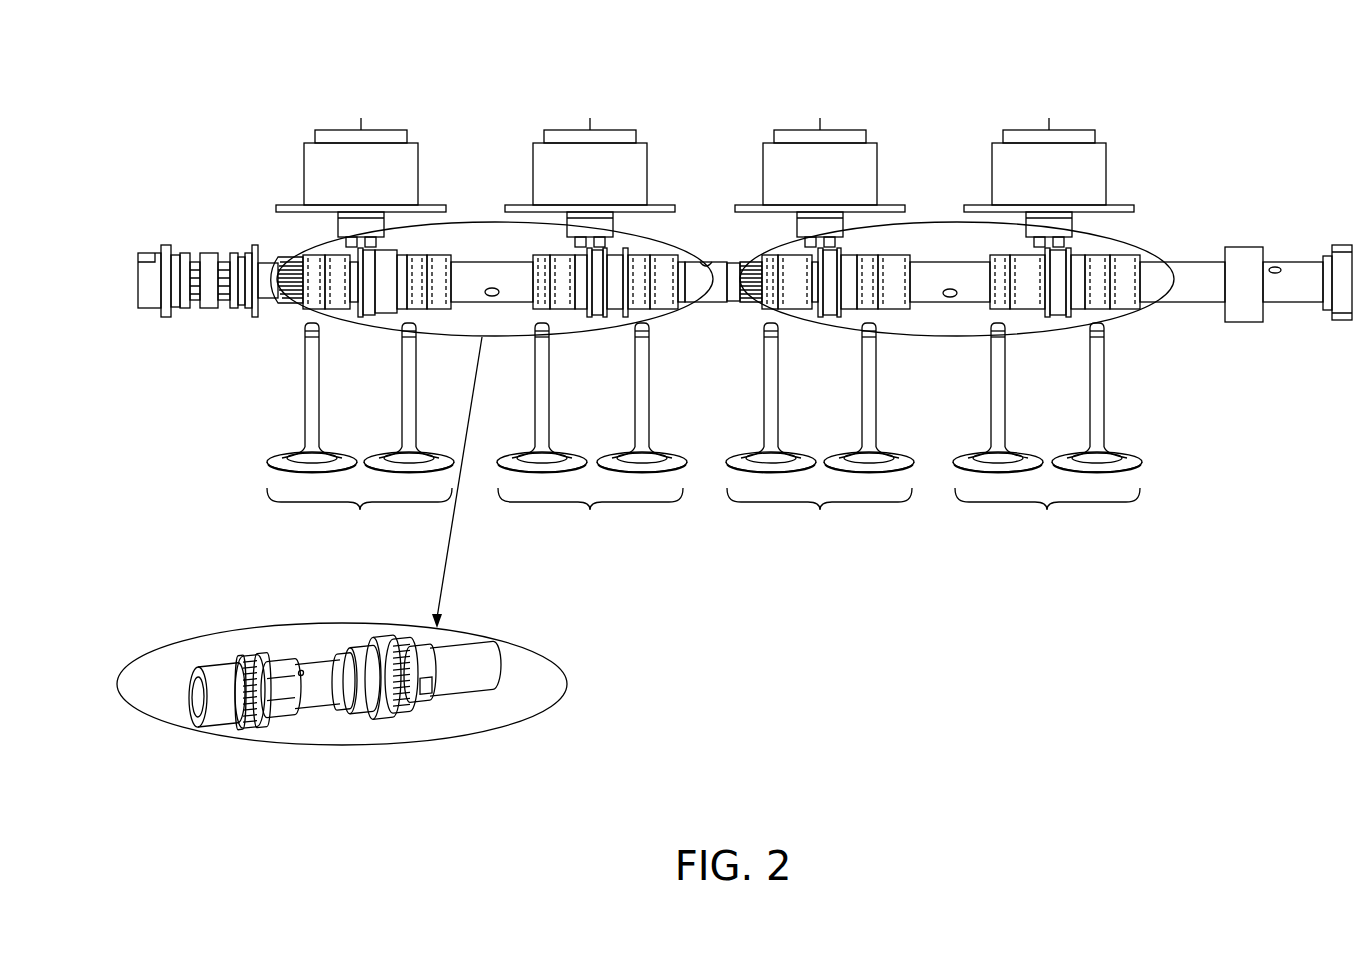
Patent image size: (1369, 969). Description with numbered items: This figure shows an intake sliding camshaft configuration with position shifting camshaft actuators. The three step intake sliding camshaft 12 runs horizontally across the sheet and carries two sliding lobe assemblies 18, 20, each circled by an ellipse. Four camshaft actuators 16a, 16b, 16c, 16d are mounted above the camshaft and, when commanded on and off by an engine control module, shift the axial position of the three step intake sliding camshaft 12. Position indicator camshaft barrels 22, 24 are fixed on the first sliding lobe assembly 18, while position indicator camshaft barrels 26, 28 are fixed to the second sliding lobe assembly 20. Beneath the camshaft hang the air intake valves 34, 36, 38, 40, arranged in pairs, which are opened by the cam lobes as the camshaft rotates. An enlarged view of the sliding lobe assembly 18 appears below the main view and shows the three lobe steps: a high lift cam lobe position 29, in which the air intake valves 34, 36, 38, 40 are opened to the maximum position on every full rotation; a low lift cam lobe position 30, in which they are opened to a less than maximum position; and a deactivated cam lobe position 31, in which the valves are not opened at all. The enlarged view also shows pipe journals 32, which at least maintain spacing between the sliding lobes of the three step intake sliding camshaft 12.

The three step intake sliding camshaft 12 is at (220, 244).
The camshaft actuator 16a is at (414, 141).
The camshaft actuator 16b is at (645, 141).
The camshaft actuator 16c is at (874, 141).
The camshaft actuator 16d is at (1104, 141).
The sliding lobe assembly 18 is at (300, 312).
The sliding lobe assembly 20 is at (1149, 253).
The position indicator camshaft barrel 22 is at (386, 266).
The position indicator camshaft barrel 24 is at (620, 270).
The position indicator camshaft barrel 26 is at (841, 312).
The position indicator camshaft barrel 28 is at (1064, 312).
The high lift cam lobe position 29 is at (210, 665).
The low lift cam lobe position 30 is at (228, 690).
The deactivated cam lobe position 31 is at (374, 717).
The pipe journal 32 is at (473, 658).
The air intake valve 34 is at (360, 433).
The air intake valve 36 is at (592, 433).
The air intake valve 38 is at (820, 433).
The air intake valve 40 is at (1047, 433).